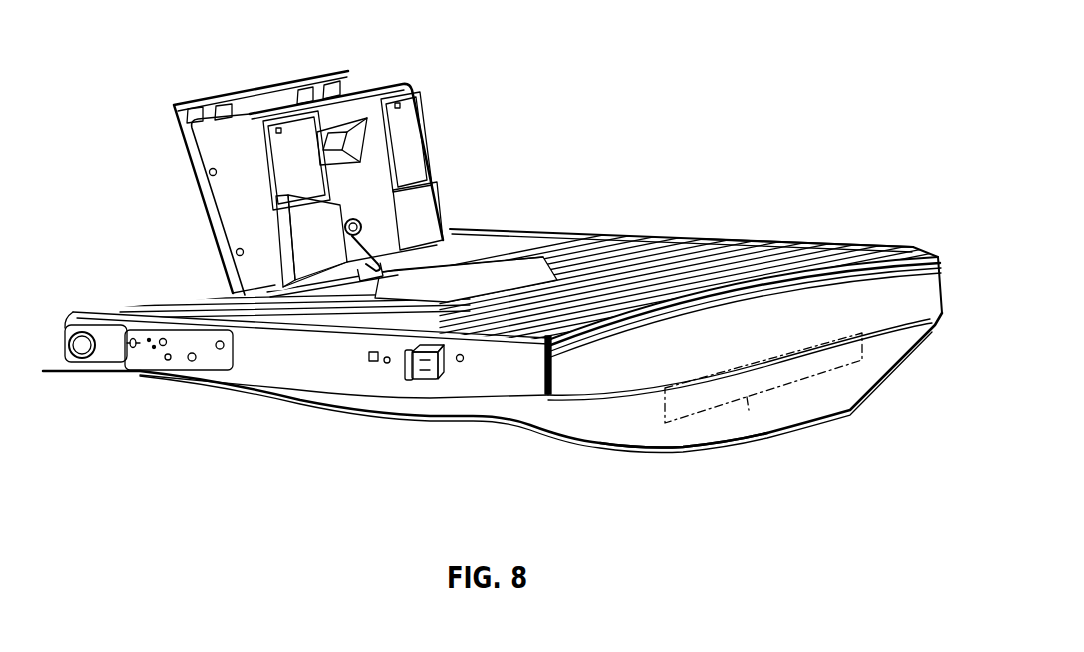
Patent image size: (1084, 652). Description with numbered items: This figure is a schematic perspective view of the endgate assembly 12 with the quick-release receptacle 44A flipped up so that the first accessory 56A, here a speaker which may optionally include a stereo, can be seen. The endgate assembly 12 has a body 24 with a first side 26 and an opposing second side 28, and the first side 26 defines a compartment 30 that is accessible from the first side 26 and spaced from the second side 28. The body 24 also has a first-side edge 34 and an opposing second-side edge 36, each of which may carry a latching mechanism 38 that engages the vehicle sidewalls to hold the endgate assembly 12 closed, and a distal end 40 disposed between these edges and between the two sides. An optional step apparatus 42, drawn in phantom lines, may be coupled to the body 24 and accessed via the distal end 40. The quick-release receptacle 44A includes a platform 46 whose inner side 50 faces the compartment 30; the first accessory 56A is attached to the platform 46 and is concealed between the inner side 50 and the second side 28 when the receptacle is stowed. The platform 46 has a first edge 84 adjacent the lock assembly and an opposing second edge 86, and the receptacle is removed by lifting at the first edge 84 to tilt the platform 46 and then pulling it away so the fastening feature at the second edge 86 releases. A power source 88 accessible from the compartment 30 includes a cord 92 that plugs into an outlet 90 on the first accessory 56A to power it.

The endgate assembly 12 is at (503, 259).
The body 24 is at (514, 284).
The first side 26 is at (865, 250).
The second side 28 is at (492, 407).
The compartment 30 is at (457, 268).
The first-side edge 34 is at (722, 239).
The second-side edge 36 is at (267, 373).
The latching mechanism 38 is at (410, 368).
The distal end 40 is at (673, 432).
The step apparatus 42 is at (760, 433).
The quick-release receptacle 44A is at (320, 156).
The platform 46 is at (218, 98).
The inner side 50 is at (318, 92).
The first accessory 56A is at (434, 190).
The first edge 84 is at (347, 156).
The second edge 86 is at (192, 174).
The power source 88 is at (370, 280).
The outlet 90 is at (358, 222).
The cord 92 is at (380, 262).